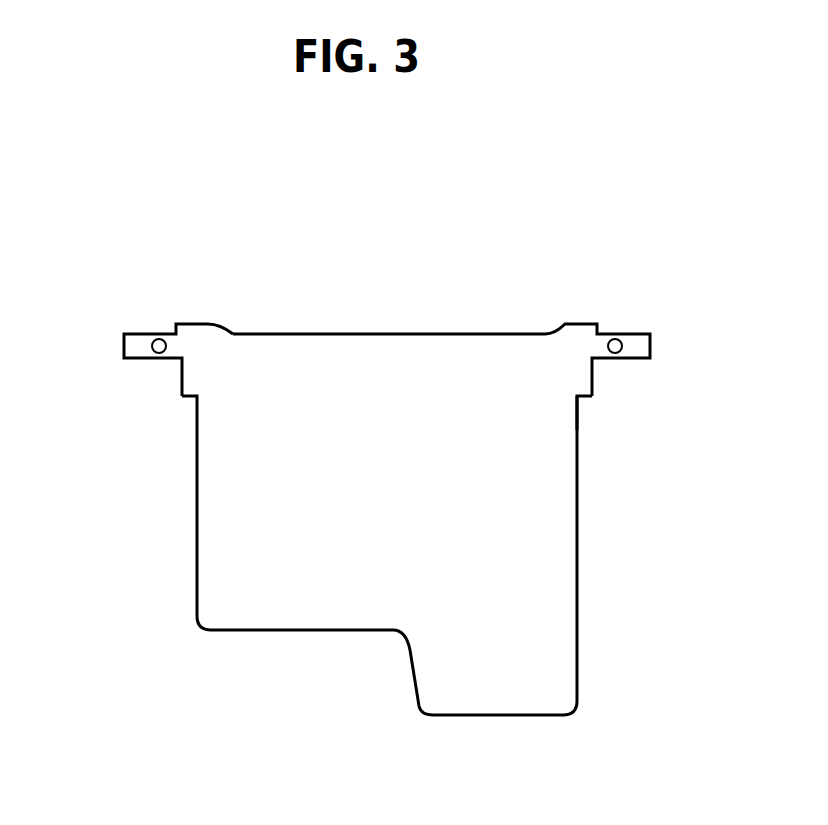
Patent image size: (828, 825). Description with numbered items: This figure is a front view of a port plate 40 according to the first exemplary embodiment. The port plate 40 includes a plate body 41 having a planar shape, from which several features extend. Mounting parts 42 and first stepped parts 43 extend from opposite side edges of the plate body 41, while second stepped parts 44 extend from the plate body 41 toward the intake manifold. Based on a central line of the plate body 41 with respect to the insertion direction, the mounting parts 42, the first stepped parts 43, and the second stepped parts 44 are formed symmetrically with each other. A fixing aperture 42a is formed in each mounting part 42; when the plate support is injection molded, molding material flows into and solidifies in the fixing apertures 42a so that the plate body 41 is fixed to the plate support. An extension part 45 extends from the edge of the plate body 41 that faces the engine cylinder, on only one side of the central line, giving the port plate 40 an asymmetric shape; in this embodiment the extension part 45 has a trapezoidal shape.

The port plate 40 is at (260, 223).
The plate body 41 is at (253, 523).
The mounting part 42 is at (135, 350).
The fixing aperture 42a is at (157, 339).
The first stepped part 43 is at (582, 388).
The second stepped part 44 is at (578, 323).
The extension part 45 is at (527, 680).